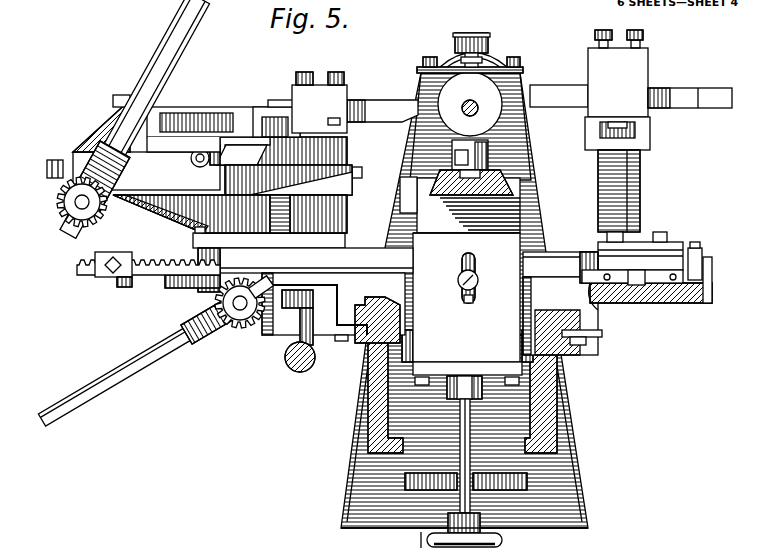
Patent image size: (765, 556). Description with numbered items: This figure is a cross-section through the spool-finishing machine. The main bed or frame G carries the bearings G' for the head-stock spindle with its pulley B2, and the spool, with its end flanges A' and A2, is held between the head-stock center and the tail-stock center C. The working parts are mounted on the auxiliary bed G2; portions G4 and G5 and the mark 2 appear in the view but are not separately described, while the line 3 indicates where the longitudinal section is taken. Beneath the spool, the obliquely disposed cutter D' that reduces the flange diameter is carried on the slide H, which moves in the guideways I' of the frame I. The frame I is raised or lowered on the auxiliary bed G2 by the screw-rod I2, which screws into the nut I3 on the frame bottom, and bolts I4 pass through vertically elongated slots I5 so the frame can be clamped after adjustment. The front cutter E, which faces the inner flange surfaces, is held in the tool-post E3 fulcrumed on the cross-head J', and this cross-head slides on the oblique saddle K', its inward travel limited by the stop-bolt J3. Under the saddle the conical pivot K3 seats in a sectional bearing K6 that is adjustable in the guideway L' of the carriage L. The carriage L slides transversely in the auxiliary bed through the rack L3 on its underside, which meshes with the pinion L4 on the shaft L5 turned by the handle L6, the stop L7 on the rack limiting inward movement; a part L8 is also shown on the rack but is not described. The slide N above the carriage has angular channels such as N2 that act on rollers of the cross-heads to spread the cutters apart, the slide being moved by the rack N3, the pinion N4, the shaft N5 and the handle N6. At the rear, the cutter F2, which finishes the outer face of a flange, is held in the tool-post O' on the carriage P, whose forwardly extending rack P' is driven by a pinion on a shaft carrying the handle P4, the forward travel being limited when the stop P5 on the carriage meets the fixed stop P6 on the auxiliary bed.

The main bed or frame G is at (464, 300).
The bearings G' is at (460, 58).
The auxiliary bed G2 is at (628, 314).
The bracket block G4 is at (383, 306).
The hook G5 is at (292, 368).
The end flange A2 is at (452, 112).
The end flange A' is at (437, 542).
The tail-stock center C is at (475, 96).
The longitudinally-moving cutter D' is at (502, 156).
The slide H is at (440, 197).
The frame I is at (467, 276).
The guideways I' is at (399, 195).
The screw-rod I2 is at (467, 498).
The nut I3 is at (467, 382).
The bolts I4 is at (470, 282).
The vertically-elongated slots I5 is at (476, 296).
The direction arrow 2 is at (397, 540).
The section line 3 is at (476, 38).
The pulley B2 is at (452, 52).
The front cutter E is at (391, 99).
The tool-post E3 is at (318, 90).
The rear cutter F2 is at (563, 93).
The tool-post O' is at (658, 90).
The carriage P is at (631, 191).
The rack P' is at (629, 255).
The handle P4 is at (192, 232).
The stop P5 is at (705, 251).
The fixed stop P6 is at (640, 286).
The saddle K' is at (211, 167).
The pivot K3 is at (395, 252).
The bearing section K6 is at (346, 165).
The cross-head J' is at (194, 118).
The stop-bolt J3 is at (190, 165).
The carriage L is at (241, 214).
The guideway L' is at (297, 184).
The rack L3 is at (178, 272).
The pinion L4 is at (245, 309).
The shaft L5 is at (232, 326).
The handle L6 is at (160, 354).
The stop L7 is at (104, 273).
The pawl block L8 is at (116, 262).
The slide N is at (198, 112).
The angular channel N2 is at (272, 110).
The rack N3 is at (47, 169).
The pinion N4 is at (72, 202).
The shaft N5 is at (60, 223).
The handle N6 is at (165, 60).